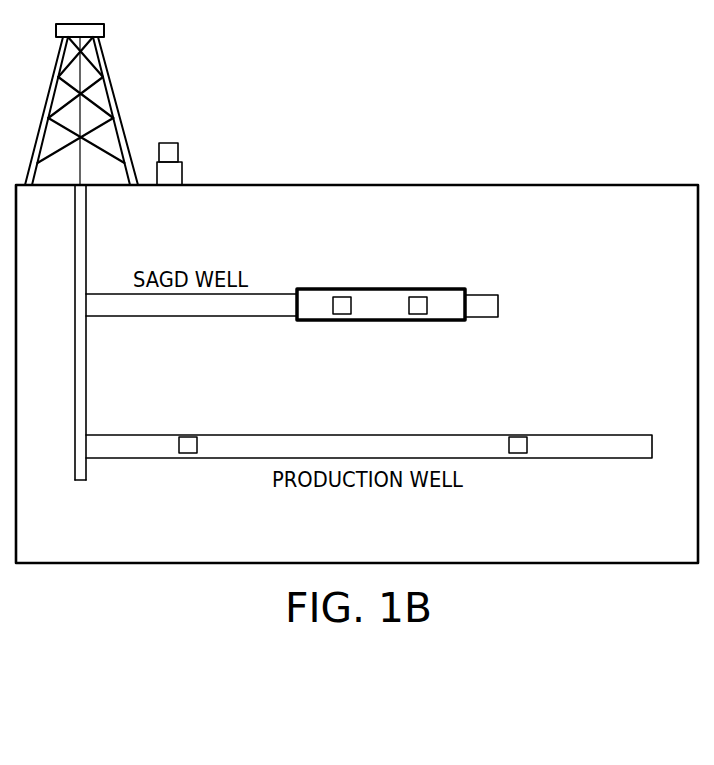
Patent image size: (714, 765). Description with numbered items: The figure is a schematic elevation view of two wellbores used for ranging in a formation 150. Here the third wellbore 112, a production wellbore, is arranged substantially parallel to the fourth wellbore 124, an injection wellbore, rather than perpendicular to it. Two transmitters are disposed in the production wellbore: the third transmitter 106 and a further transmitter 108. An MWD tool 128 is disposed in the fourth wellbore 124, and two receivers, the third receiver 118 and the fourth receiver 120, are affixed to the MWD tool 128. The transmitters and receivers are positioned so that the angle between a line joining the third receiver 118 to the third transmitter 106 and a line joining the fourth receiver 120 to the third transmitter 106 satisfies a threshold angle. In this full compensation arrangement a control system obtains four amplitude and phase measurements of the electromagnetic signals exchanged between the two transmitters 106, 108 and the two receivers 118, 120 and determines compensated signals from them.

The formation 150 is at (652, 248).
The MWD tool 128 is at (398, 279).
The third receiver 118 is at (342, 314).
The fourth receiver 120 is at (418, 314).
The fourth wellbore 124 is at (498, 305).
The third transmitter 106 is at (188, 458).
The transmitter 108 is at (518, 458).
The third wellbore 112 is at (652, 447).